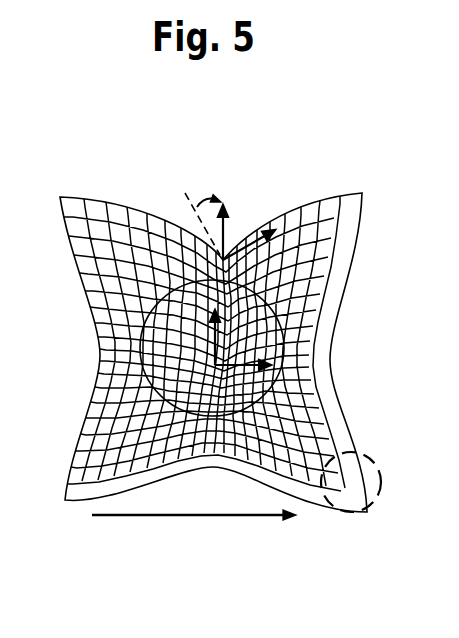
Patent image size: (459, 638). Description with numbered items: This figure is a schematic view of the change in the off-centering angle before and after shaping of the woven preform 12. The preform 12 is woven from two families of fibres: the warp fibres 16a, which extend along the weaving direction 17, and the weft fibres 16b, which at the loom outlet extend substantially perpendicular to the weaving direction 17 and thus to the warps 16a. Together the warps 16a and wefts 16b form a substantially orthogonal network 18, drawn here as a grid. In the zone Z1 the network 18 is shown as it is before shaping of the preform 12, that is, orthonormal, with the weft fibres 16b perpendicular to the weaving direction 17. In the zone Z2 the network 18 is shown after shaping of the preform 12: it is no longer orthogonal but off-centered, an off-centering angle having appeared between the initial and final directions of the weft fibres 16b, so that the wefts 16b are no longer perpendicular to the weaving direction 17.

The preform 12 is at (114, 192).
The warp fibres 16a is at (248, 232).
The weft fibres 16b is at (226, 240).
The weaving direction 17 is at (213, 515).
The network 18 is at (382, 474).
The zone Z1 is at (270, 430).
The zone Z2 is at (310, 250).